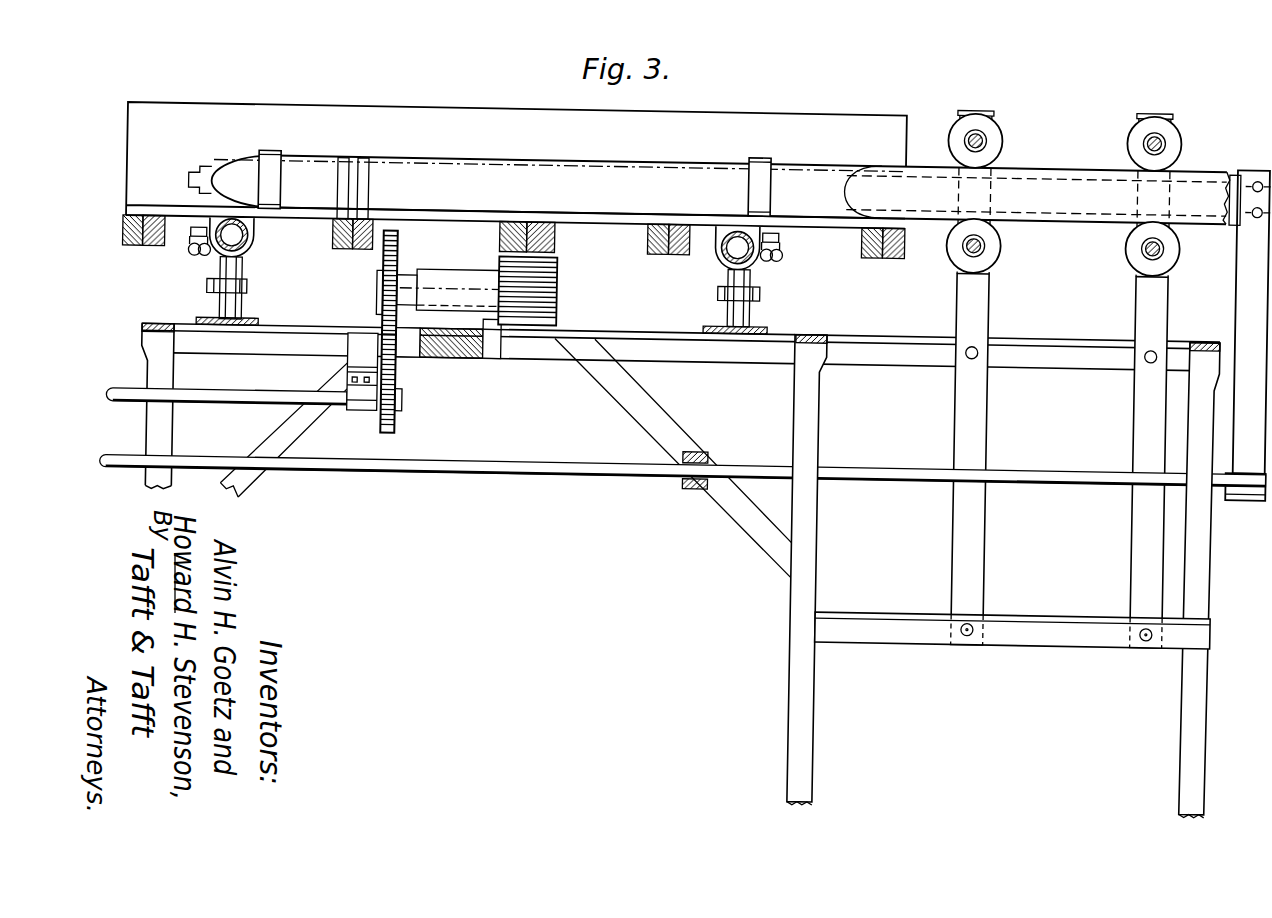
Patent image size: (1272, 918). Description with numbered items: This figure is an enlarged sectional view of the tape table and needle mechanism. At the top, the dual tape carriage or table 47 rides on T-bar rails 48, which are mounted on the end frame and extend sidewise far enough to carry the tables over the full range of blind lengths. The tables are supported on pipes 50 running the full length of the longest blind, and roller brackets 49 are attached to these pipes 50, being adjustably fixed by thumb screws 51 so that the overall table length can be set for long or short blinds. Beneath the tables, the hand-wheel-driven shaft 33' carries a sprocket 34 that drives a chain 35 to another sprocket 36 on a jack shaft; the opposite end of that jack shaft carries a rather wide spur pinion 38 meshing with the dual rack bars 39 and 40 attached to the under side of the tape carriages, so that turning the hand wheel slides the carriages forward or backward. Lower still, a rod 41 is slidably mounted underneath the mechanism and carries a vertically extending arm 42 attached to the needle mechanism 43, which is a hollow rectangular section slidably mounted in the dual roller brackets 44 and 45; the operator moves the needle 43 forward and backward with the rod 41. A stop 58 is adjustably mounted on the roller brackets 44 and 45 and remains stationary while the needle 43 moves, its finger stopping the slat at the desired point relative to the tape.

The shaft 33' is at (226, 383).
The sprocket 34 is at (401, 420).
The chain 35 is at (395, 363).
The sprocket 36 is at (386, 258).
The spur pinion 38 is at (560, 292).
The rack bar 39 is at (502, 234).
The rack bar 40 is at (558, 236).
The rod 41 is at (458, 470).
The vertically extending arm 42 is at (1239, 263).
The needle mechanism 43 is at (1086, 128).
The roller bracket 44 is at (991, 97).
The roller bracket 45 is at (1160, 86).
The tape carriage 47 is at (146, 246).
The T-bar rail 48 is at (258, 317).
The roller bracket 49 is at (246, 262).
The pipe 50 is at (251, 234).
The thumb screw 51 is at (192, 250).
The stop 58 is at (1034, 200).